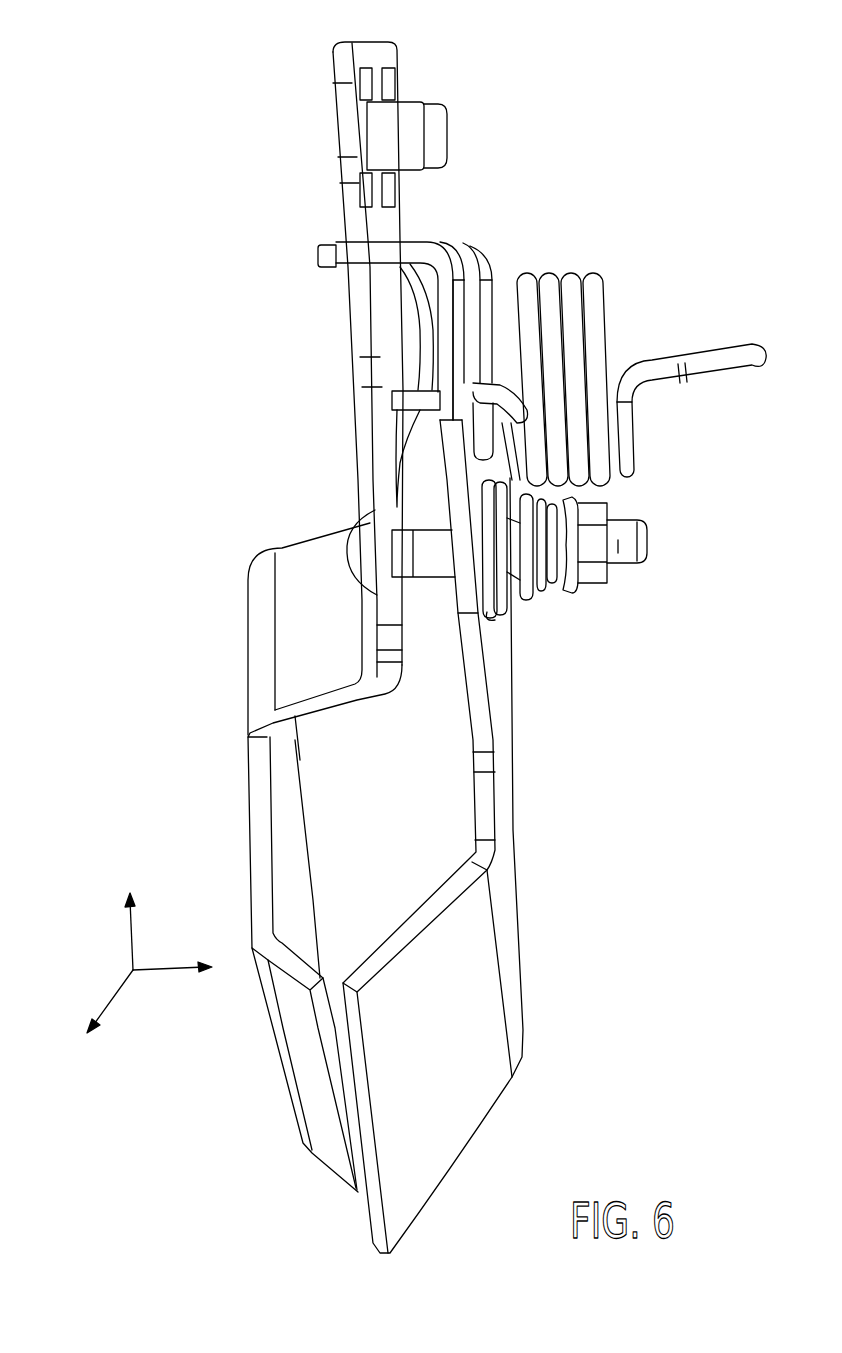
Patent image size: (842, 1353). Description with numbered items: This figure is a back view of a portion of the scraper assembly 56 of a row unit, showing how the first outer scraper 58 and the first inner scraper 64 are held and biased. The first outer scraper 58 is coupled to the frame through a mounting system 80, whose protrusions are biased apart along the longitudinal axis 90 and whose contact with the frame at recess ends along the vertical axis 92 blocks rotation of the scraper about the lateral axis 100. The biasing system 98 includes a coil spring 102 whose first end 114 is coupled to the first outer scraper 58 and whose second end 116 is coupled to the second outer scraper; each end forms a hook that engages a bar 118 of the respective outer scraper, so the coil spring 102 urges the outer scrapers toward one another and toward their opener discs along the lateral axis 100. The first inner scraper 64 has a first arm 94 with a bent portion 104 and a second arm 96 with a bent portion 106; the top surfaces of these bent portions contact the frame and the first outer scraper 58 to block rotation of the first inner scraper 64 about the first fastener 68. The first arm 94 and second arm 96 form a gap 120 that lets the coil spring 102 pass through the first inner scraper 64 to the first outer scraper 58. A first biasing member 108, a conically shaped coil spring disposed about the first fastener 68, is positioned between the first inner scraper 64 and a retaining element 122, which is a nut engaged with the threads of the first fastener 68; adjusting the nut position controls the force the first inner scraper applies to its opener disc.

The scraper assembly 56 is at (646, 183).
The first outer scraper 58 is at (372, 42).
The first inner scraper 64 is at (503, 740).
The first fastener 68 is at (358, 559).
The mounting system 80 is at (448, 93).
The longitudinal axis 90 is at (113, 997).
The vertical axis 92 is at (131, 940).
The first arm 94 is at (492, 282).
The second arm 96 is at (447, 350).
The biasing system 98 is at (652, 369).
The lateral axis 100 is at (167, 968).
The coil spring 102 is at (633, 453).
The bent portion 104 is at (440, 240).
The bent portion 106 is at (322, 256).
The first biasing member 108 is at (528, 600).
The first end 114 is at (400, 398).
The second end 116 is at (757, 357).
The bar 118 is at (407, 312).
The gap 120 is at (430, 228).
The retaining element 122 is at (610, 570).